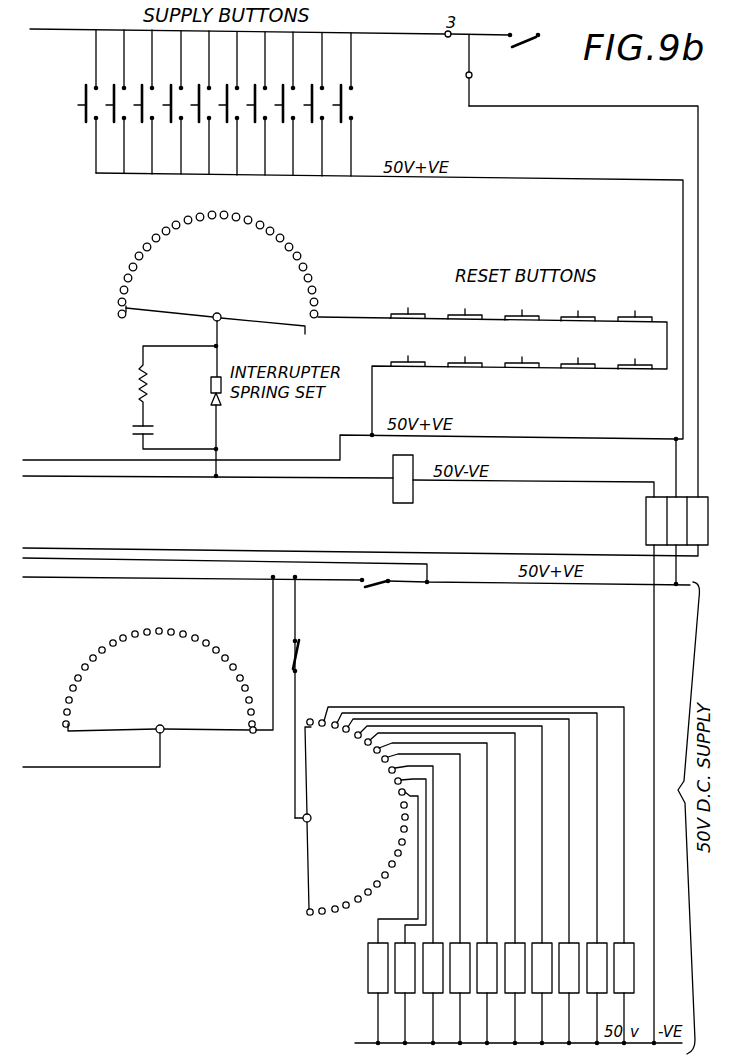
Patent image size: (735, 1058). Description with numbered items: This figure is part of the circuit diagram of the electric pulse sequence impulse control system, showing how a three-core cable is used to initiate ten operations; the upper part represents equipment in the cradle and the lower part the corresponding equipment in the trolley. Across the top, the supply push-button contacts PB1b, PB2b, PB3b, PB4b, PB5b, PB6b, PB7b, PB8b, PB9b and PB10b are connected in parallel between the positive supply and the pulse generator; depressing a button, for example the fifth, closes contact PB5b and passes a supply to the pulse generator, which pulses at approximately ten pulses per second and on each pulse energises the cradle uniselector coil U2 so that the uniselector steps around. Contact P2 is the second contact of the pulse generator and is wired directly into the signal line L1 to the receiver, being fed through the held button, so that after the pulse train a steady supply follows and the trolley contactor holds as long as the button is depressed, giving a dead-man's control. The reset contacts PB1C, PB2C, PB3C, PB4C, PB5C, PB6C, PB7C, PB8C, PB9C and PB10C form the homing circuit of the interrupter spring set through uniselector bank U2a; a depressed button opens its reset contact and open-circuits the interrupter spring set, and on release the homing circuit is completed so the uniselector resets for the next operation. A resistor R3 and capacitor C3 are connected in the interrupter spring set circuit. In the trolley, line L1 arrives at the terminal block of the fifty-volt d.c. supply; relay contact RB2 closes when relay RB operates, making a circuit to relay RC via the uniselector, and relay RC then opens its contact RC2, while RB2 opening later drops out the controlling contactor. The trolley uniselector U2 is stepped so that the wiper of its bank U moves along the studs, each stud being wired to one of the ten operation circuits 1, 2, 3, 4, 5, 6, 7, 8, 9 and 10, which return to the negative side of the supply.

The supply contact of push button PB1b is at (91, 101).
The supply contact of push button PB2b is at (119, 101).
The supply contact of push button PB3b is at (147, 102).
The supply contact of push button PB4b is at (176, 102).
The supply contact of push button PB5b is at (204, 102).
The supply contact of push button PB6b is at (232, 103).
The supply contact of push button PB7b is at (260, 103).
The supply contact of push button PB8b is at (288, 103).
The supply contact of push button PB9b is at (317, 104).
The supply contact of push button PB10b is at (348, 104).
The pulse generator contact P2 is at (505, 61).
The signal line L1 is at (365, 321).
The uniselector bank U2a is at (218, 272).
The resistor 200 ohm R3 is at (149, 386).
The capacitor 1 mf C3 is at (153, 427).
The reset contact of push button PB1C is at (408, 303).
The reset contact of push button PB2C is at (465, 304).
The reset contact of push button PB3C is at (523, 304).
The reset contact of push button PB4C is at (580, 305).
The reset contact of push button PB5C is at (632, 305).
The reset contact of push button PB6C is at (408, 351).
The reset contact of push button PB7C is at (465, 351).
The reset contact of push button PB8C is at (523, 351).
The reset contact of push button PB9C is at (577, 352).
The reset contact of push button PB10C is at (636, 352).
The uniselector coil U2 is at (218, 609).
The relay contact RB2 is at (382, 597).
The relay contact RC2 is at (307, 696).
The trolley uniselector bank U is at (351, 817).
The operation circuit 1 is at (479, 876).
The operation circuit 2 is at (472, 879).
The operation circuit 3 is at (463, 882).
The operation circuit 4 is at (456, 885).
The operation circuit 5 is at (447, 889).
The operation circuit 6 is at (438, 894).
The operation circuit 7 is at (429, 899).
The operation circuit 8 is at (419, 905).
The operation circuit 9 is at (410, 912).
The operation circuit 10 is at (392, 918).